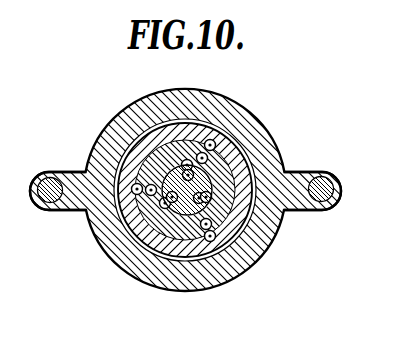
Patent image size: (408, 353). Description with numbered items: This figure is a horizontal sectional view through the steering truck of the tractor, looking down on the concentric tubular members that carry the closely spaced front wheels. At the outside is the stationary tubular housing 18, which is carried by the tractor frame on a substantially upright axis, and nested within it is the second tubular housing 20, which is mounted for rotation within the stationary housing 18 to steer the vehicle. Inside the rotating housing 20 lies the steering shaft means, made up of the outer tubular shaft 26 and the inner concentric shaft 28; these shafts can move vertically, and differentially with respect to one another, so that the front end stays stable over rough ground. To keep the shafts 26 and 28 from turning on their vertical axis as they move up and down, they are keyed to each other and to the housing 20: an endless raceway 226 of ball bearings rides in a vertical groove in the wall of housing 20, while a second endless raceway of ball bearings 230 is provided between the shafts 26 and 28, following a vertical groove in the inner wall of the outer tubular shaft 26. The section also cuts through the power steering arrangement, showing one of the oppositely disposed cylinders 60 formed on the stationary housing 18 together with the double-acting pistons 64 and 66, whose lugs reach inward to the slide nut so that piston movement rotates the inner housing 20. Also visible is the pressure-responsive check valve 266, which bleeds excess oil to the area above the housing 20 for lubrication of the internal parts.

The stationary tubular housing 18 is at (200, 292).
The second tubular housing 20 is at (270, 236).
The outer tubular shaft 26 is at (281, 215).
The inner concentric shaft 28 is at (238, 158).
The cylinder 60 is at (60, 172).
The double-acting piston 64 is at (334, 183).
The double-acting piston 66 is at (40, 210).
The endless raceway of ball bearings 226 is at (212, 160).
The endless raceway of ball bearings 230 is at (129, 118).
The pressure-responsive check valve 266 is at (130, 197).